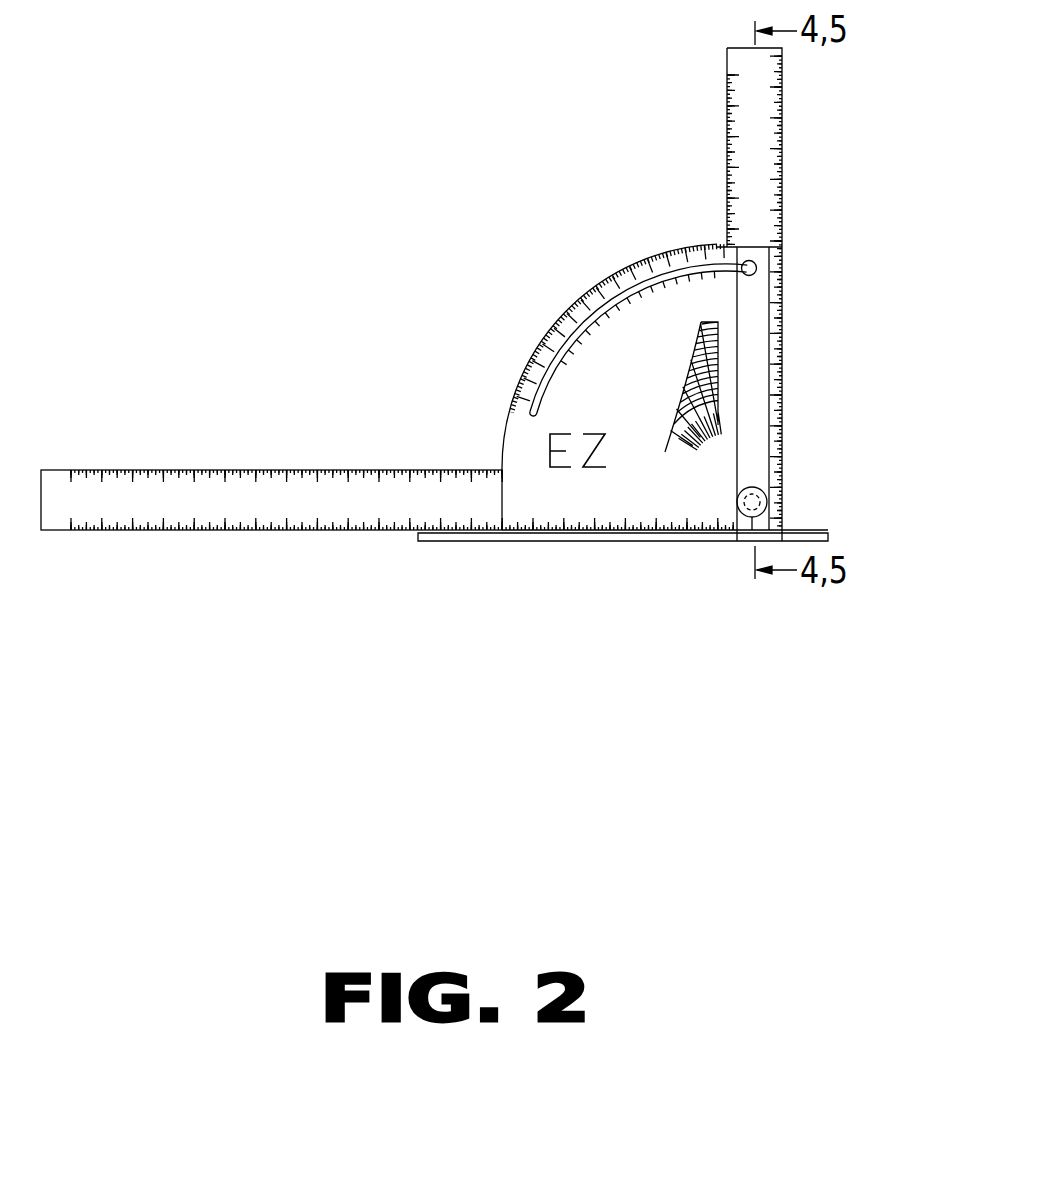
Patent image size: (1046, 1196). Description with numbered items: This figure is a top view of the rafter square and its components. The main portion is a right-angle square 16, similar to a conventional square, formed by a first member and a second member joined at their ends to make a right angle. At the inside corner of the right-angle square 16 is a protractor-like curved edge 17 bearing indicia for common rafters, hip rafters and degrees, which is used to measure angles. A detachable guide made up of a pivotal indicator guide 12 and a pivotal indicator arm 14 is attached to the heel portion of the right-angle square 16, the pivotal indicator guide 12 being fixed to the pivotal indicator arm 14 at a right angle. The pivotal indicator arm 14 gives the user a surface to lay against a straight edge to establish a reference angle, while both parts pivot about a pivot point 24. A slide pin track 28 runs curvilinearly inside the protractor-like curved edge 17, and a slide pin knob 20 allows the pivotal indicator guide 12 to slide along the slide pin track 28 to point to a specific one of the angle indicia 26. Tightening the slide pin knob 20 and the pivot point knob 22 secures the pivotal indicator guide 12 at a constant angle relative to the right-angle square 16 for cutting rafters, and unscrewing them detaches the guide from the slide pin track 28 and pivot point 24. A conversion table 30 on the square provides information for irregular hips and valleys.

The pivotal indicator guide 12 is at (742, 262).
The pivotal indicator arm 14 is at (613, 541).
The right-angle square 16 is at (297, 532).
The protractor-like curved edge 17 is at (509, 403).
The slide pin knob 20 is at (743, 263).
The pivot point knob 22 is at (758, 489).
The pivot point 24 is at (752, 510).
The angle indicia 26 is at (553, 338).
The slide pin track 28 is at (606, 302).
The conversion table 30 is at (665, 455).